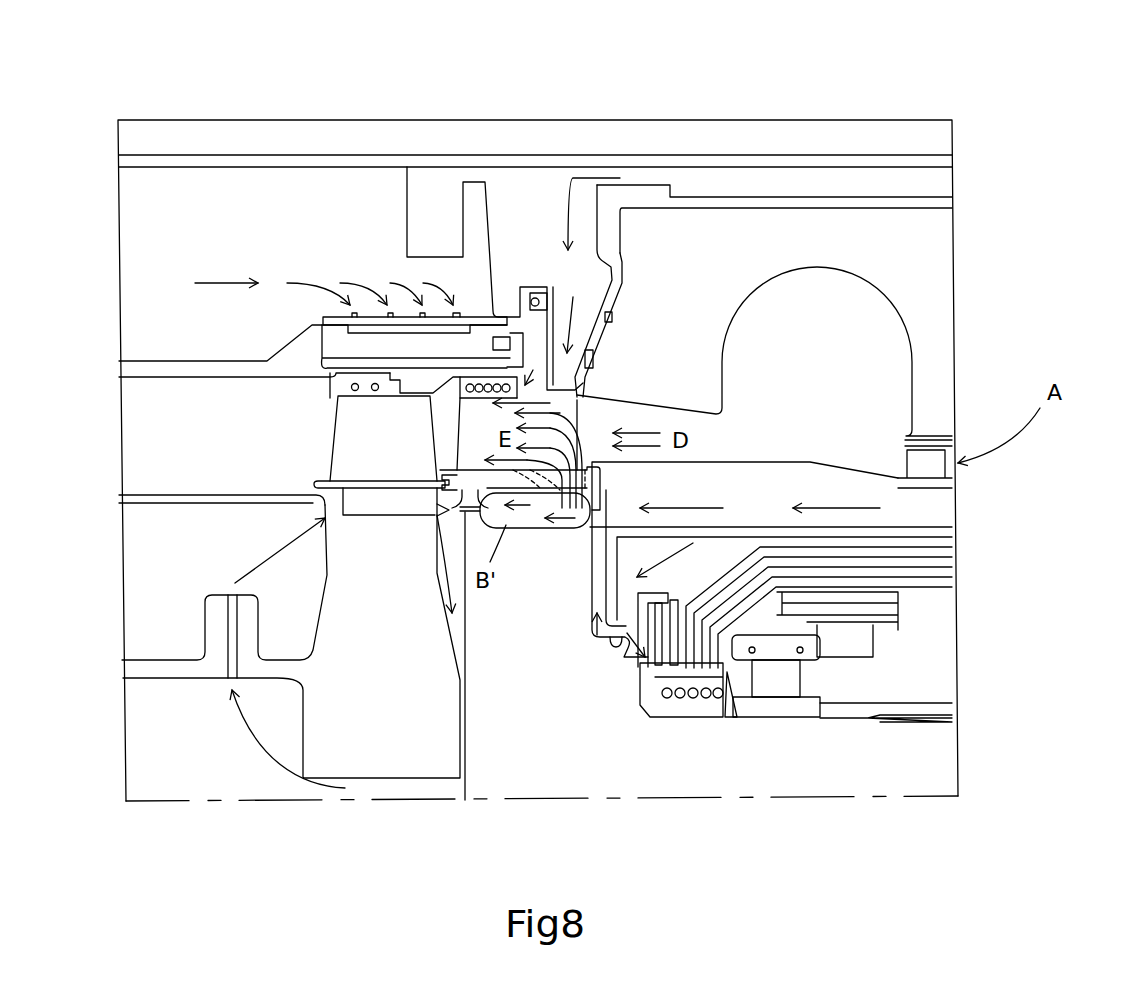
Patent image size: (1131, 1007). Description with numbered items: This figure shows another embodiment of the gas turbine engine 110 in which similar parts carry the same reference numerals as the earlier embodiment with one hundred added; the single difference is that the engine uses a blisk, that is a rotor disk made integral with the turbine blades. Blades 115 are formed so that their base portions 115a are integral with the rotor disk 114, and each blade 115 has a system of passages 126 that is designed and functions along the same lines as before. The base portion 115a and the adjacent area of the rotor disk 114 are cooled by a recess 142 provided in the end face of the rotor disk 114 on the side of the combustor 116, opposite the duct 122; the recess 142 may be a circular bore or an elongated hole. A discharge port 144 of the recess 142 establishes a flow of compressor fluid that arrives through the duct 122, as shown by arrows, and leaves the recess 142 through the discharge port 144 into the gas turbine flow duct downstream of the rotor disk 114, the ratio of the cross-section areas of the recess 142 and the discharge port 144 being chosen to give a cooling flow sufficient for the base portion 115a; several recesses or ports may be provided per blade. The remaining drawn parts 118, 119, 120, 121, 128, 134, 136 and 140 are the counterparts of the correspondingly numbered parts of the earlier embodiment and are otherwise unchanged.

The gas turbine engine 110 is at (727, 118).
The rotor disk 114 is at (535, 760).
The blade 115 is at (455, 452).
The base portion 115a is at (479, 520).
The combustor 116 is at (793, 240).
The cooling air passage 118 is at (395, 758).
The turbine stage 119 is at (402, 469).
The casing cavity 120 is at (826, 355).
The casing flange 121 is at (928, 462).
The duct 122 is at (928, 513).
The system of passages 126 is at (518, 515).
The seal land 128 is at (490, 493).
The strut 134 is at (579, 420).
The turbine blade 136 is at (457, 438).
The nozzle vane 140 is at (490, 427).
The recess 142 is at (563, 530).
The discharge port 144 is at (457, 512).